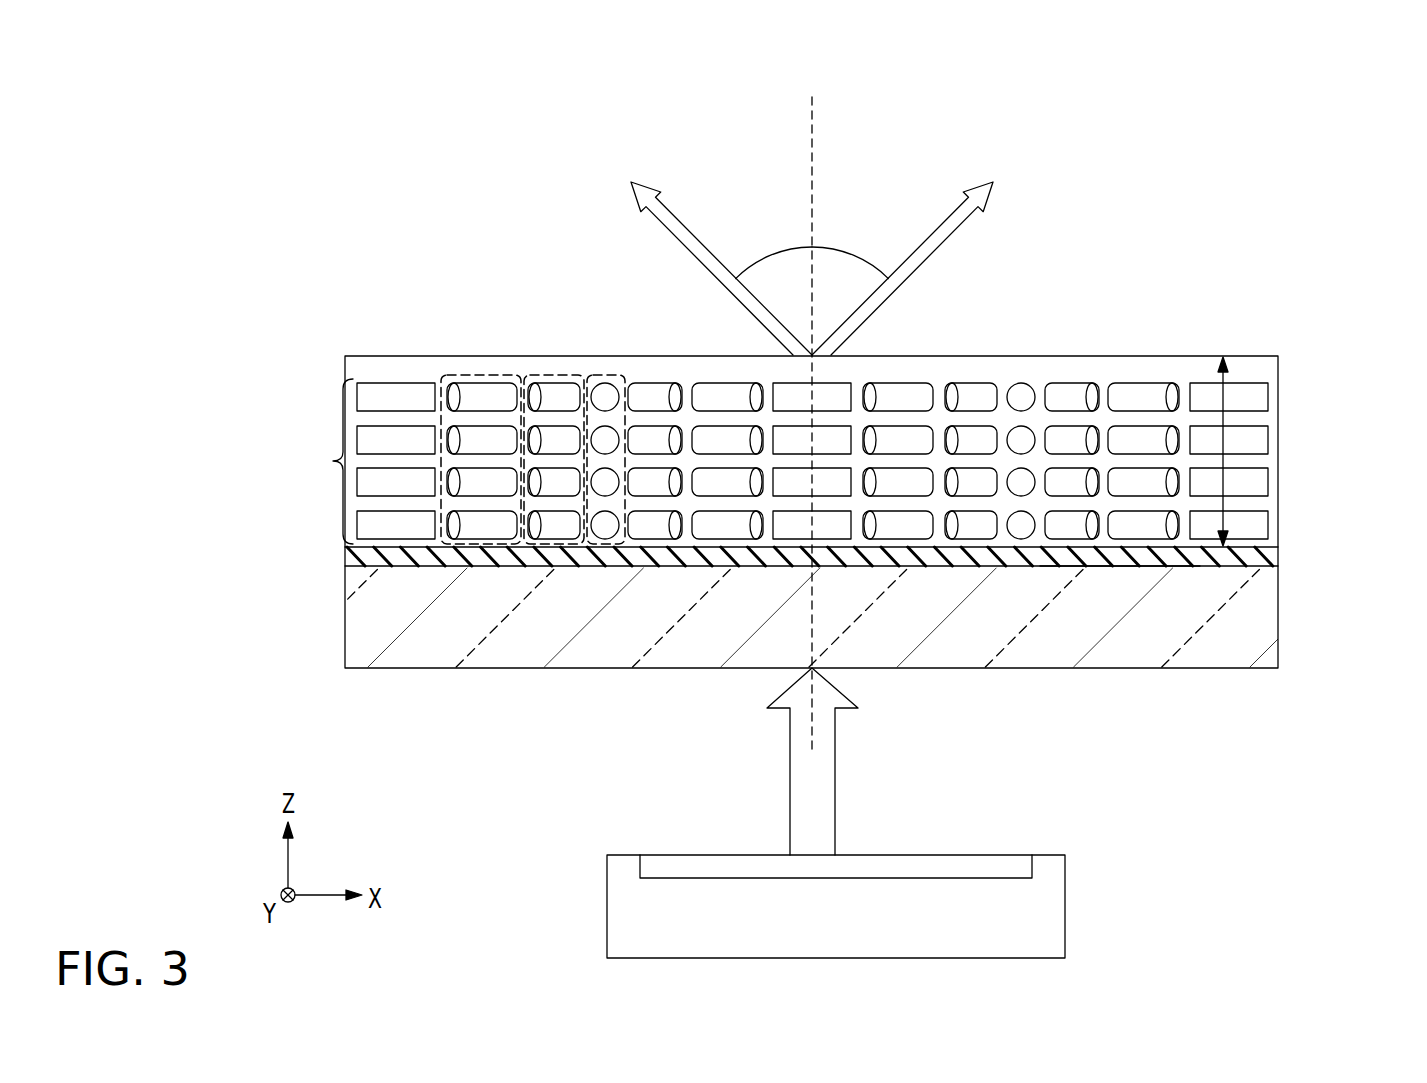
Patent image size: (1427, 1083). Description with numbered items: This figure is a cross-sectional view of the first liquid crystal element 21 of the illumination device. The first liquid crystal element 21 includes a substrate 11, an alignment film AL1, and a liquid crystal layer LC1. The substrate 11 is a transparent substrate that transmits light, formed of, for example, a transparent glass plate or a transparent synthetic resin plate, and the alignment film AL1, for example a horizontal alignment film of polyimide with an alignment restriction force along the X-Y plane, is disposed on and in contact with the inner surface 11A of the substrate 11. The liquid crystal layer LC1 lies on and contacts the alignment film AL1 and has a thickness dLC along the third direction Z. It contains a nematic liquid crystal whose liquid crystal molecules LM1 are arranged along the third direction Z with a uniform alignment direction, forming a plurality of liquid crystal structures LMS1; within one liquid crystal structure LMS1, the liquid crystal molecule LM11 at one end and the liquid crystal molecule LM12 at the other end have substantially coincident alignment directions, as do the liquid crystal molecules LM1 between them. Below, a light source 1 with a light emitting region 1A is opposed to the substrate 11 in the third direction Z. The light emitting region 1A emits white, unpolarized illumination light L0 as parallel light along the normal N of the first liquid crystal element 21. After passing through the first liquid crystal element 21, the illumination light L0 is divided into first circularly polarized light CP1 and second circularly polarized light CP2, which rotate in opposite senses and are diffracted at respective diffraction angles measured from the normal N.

The first liquid crystal element 21 is at (1266, 243).
The substrate 11 is at (1265, 633).
The inner surface 11A is at (1111, 550).
The alignment film AL1 is at (1265, 553).
The liquid crystal layer LC1 is at (814, 499).
The thickness dLC is at (1224, 437).
The liquid crystal molecules LM1 is at (772, 461).
The liquid crystal molecule LM11 is at (555, 527).
The liquid crystal molecule LM12 is at (560, 403).
The liquid crystal structure LMS1 is at (607, 374).
The normal N is at (812, 409).
The first circularly polarized light CP1 is at (678, 229).
The second circularly polarized light CP2 is at (946, 229).
The illumination light L0 is at (823, 788).
The light source device 1 is at (859, 878).
The light emitting region 1A is at (1000, 866).